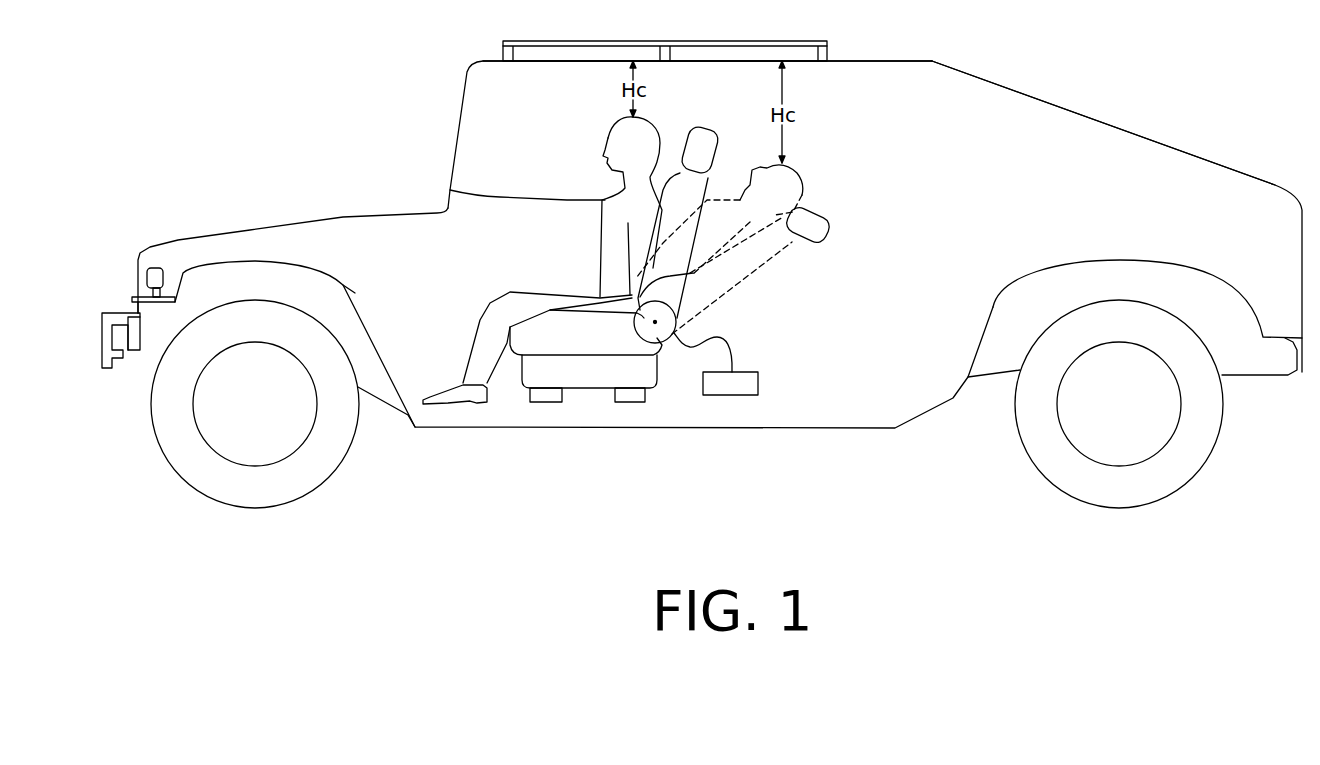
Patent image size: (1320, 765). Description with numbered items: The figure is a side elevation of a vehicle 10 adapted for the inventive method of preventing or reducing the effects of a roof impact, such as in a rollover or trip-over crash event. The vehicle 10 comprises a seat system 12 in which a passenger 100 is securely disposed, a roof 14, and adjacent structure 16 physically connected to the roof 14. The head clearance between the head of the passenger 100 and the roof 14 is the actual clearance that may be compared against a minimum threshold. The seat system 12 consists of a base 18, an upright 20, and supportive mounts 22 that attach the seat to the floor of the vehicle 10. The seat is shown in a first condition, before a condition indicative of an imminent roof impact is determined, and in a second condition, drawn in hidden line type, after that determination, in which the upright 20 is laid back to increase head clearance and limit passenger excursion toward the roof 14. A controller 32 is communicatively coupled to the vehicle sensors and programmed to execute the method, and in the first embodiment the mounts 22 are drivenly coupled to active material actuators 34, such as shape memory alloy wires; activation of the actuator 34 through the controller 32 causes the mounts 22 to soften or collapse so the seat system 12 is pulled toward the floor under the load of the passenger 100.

The vehicle 10 is at (1097, 187).
The seat system 12 is at (877, 226).
The roof 14 is at (877, 62).
The adjacent structure 16 is at (503, 41).
The base 18 is at (587, 343).
The upright 20 is at (746, 292).
The supportive mounts 22 is at (527, 402).
The controller 32 is at (745, 395).
The active material actuator 34 is at (655, 322).
The passenger 100 is at (447, 190).